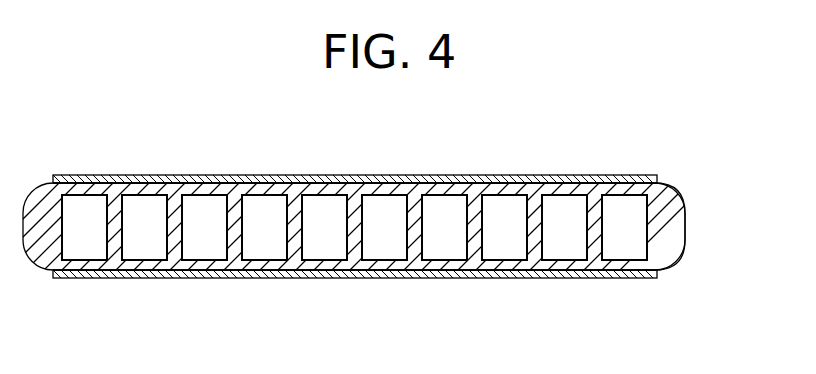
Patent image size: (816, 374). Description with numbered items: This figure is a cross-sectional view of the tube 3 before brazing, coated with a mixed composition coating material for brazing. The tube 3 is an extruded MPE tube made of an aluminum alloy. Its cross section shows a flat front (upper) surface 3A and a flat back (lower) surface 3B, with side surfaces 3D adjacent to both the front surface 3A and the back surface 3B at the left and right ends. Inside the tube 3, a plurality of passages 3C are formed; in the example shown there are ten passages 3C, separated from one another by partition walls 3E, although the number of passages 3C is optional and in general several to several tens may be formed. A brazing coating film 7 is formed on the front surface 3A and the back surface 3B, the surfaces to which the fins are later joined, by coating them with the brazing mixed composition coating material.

The tube 3 is at (323, 187).
The front surface 3A is at (493, 183).
The back surface 3B is at (284, 272).
The passages 3C is at (143, 249).
The side surfaces 3D is at (686, 227).
The partition walls 3E is at (243, 223).
The brazing coating film 7 is at (187, 176).